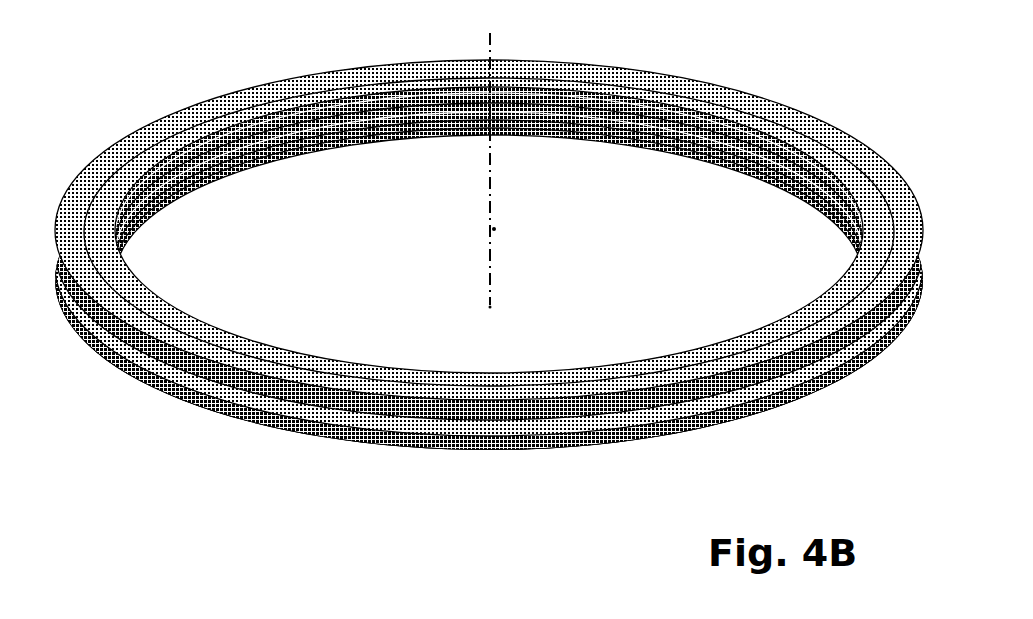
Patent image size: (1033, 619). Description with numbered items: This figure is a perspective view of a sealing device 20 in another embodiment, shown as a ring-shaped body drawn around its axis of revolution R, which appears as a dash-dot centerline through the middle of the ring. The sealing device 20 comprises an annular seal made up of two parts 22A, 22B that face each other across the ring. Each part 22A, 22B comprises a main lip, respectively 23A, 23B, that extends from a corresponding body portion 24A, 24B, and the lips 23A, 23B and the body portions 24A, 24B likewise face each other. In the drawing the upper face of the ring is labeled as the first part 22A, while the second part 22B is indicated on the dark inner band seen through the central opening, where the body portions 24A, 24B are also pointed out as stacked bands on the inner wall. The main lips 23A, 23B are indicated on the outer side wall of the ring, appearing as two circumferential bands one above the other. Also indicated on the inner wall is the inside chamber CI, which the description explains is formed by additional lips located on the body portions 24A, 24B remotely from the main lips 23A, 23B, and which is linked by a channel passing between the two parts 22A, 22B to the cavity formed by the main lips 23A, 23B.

The sealing device 20 is at (139, 91).
The first part of the annular seal 22A is at (289, 100).
The second part of the annular seal 22B is at (278, 168).
The main lip of first part 23A is at (208, 366).
The main lip of second part 23B is at (266, 412).
The body portion of first part 24A is at (712, 127).
The body portion of second part 24B is at (766, 178).
The inside chamber CI is at (836, 205).
The axis of revolution R is at (490, 155).